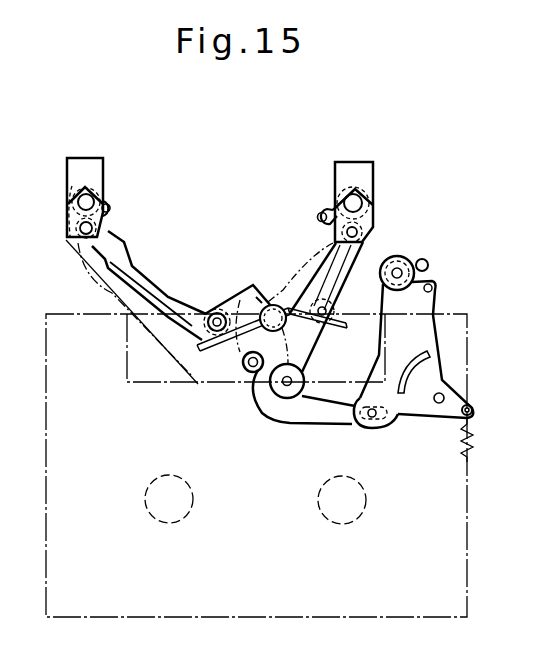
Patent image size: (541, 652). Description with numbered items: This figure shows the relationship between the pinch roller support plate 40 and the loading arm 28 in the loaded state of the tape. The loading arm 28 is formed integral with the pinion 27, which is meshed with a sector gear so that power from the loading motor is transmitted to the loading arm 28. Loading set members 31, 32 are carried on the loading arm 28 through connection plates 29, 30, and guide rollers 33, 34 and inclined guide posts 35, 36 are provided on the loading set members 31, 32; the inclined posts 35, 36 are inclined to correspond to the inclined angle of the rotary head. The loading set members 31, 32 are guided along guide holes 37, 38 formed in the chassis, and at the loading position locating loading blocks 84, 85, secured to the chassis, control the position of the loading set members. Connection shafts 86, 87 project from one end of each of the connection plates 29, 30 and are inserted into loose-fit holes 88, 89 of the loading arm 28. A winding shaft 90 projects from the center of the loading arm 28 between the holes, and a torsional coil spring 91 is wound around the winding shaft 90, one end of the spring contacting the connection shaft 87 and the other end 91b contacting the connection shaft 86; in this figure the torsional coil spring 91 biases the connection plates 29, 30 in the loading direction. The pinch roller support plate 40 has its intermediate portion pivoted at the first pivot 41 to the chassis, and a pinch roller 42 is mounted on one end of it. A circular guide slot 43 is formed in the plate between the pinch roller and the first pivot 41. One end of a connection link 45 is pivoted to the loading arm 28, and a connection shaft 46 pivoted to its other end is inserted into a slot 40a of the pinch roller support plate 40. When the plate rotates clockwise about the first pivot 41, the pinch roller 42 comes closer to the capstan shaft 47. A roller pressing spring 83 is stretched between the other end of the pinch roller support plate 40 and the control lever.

The locating loading block 84 is at (87, 158).
The locating loading block 85 is at (355, 162).
The guide roller 33 is at (90, 190).
The guide roller 34 is at (343, 192).
The loading set member 31 is at (68, 210).
The loading set member 32 is at (377, 222).
The inclined guide post 35 is at (111, 209).
The inclined guide post 36 is at (318, 214).
The guide hole 37 is at (96, 291).
The guide hole 38 is at (292, 288).
The connection plate 29 is at (150, 273).
The connection plate 30 is at (330, 262).
The connection shaft 86 is at (212, 312).
The loose-fit hole 89 is at (211, 312).
The torsional coil spring 91 is at (256, 296).
The other end of torsional coil spring 91b is at (198, 384).
The connection shaft 87 is at (344, 327).
The loose-fit hole 88 is at (332, 309).
The winding shaft 90 is at (284, 334).
The loading arm 28 is at (246, 373).
The pinion 27 is at (284, 398).
The connection link 45 is at (326, 419).
The pinch roller support plate 40 is at (428, 308).
The slot 40a is at (374, 428).
The first pivot 41 is at (447, 386).
The pinch roller 42 is at (397, 256).
The circular guide slot 43 is at (433, 355).
The connection shaft 46 is at (380, 424).
The capstan shaft 47 is at (429, 262).
The roller pressing spring 83 is at (475, 442).